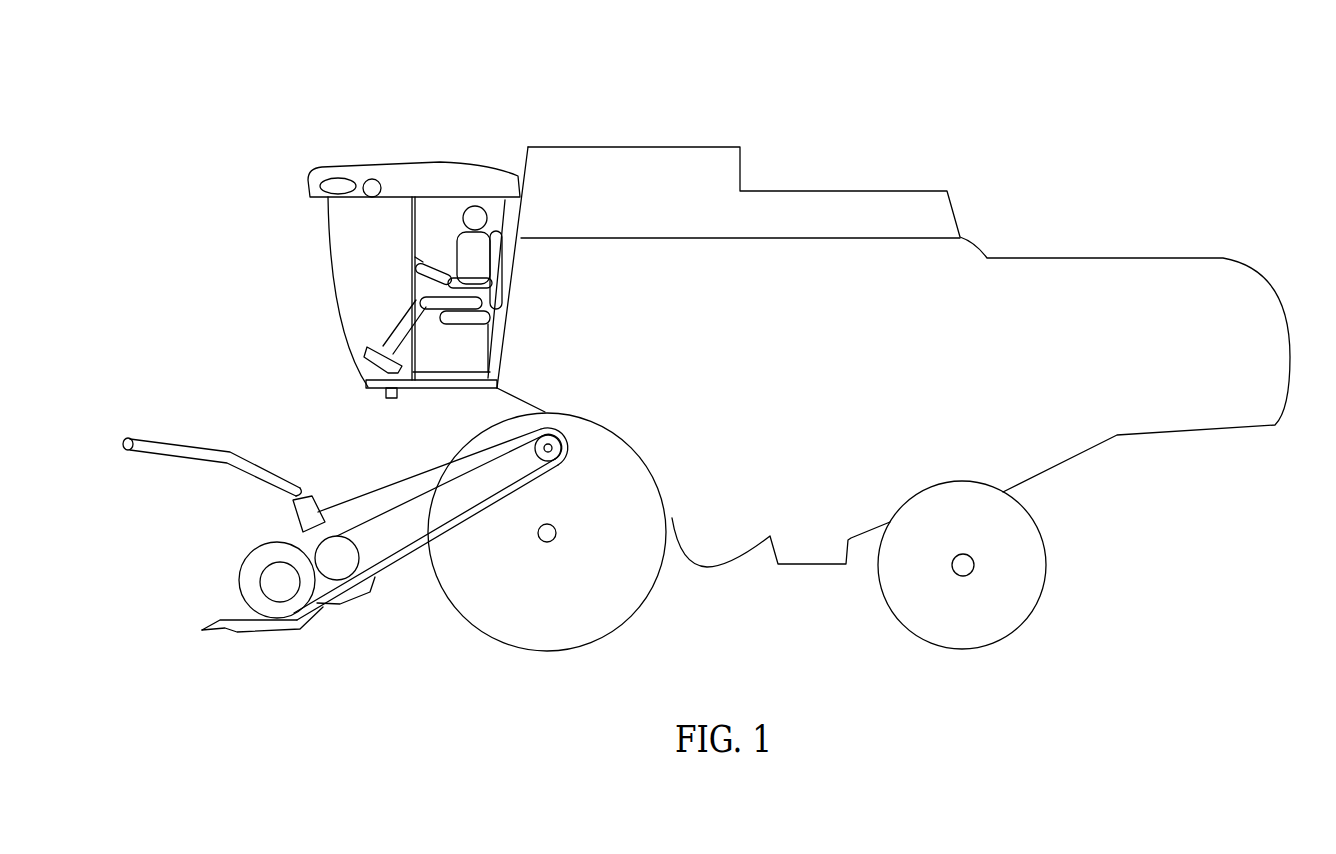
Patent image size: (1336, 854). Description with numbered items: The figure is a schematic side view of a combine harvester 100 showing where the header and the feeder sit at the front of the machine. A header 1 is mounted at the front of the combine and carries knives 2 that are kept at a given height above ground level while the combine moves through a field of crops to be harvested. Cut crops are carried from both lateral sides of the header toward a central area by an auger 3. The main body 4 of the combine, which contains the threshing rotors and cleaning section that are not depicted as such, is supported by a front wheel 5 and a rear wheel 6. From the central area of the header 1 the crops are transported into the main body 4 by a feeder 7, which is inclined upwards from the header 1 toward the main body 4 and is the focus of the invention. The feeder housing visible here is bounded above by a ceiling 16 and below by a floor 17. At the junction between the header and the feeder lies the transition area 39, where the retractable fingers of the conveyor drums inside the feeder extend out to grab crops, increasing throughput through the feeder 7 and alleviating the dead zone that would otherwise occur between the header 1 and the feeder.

The combine harvester 100 is at (1066, 135).
The header 1 is at (204, 400).
The knives 2 is at (203, 630).
The auger 3 is at (270, 578).
The main body 4 is at (774, 387).
The front wheel 5 is at (554, 620).
The rear wheel 6 is at (997, 615).
The feeder 7 is at (340, 456).
The ceiling 16 is at (425, 472).
The floor 17 is at (397, 560).
The transition area 39 is at (326, 580).